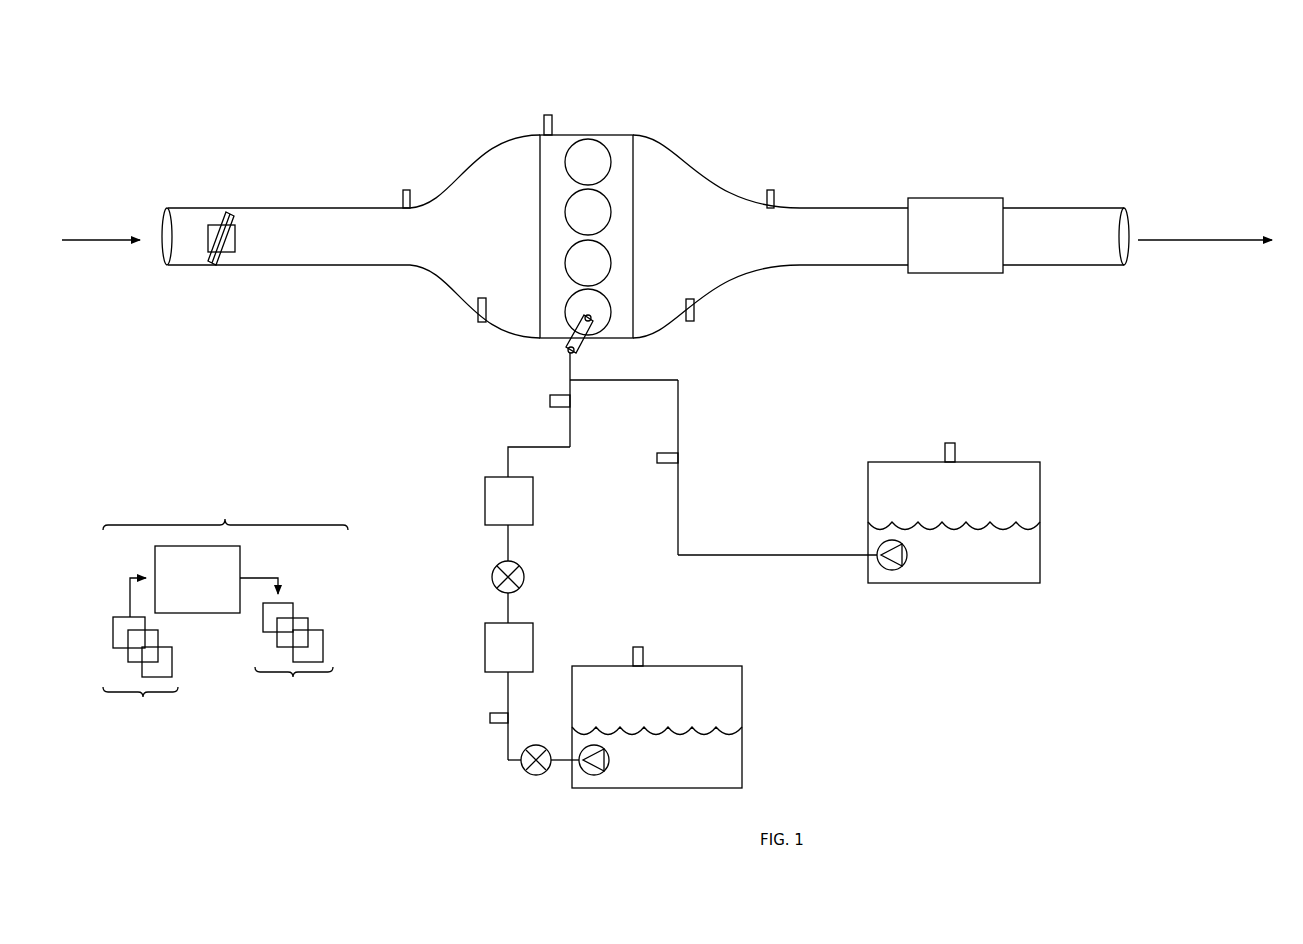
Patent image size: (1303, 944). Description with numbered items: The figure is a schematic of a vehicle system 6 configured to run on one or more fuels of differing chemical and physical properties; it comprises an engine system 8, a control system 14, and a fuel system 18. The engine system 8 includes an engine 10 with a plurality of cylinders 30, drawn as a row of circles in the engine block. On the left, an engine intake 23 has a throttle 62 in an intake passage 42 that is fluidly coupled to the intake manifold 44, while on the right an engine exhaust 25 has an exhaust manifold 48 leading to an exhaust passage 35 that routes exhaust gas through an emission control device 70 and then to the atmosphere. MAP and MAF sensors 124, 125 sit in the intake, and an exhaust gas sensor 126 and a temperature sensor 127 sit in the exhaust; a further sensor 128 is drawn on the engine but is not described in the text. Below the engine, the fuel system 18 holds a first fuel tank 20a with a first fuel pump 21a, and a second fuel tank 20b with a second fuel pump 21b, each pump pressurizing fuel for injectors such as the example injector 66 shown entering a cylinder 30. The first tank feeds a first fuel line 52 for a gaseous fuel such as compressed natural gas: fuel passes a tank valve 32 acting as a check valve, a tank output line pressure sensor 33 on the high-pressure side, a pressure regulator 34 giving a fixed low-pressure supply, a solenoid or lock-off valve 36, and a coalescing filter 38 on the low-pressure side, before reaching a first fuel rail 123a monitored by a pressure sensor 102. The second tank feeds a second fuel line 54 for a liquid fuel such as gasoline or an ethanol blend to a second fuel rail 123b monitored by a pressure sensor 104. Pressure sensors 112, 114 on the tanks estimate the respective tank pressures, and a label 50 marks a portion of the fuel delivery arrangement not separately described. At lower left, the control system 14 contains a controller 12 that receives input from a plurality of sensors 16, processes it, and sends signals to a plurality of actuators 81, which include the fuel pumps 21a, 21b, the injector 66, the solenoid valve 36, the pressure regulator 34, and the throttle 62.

The vehicle system 6 is at (238, 132).
The engine system 8 is at (752, 96).
The engine 10 is at (634, 219).
The controller 12 is at (197, 579).
The control system 14 is at (225, 503).
The sensors 16 is at (140, 656).
The fuel system 18 is at (870, 636).
The first fuel tank 20a is at (742, 769).
The second fuel tank 20b is at (1040, 566).
The first fuel pump 21a is at (606, 753).
The second fuel pump 21b is at (904, 549).
The engine intake 23 is at (355, 188).
The engine exhaust 25 is at (965, 148).
The cylinders 30 is at (611, 158).
The tank valve 32 is at (545, 749).
The tank output line pressure sensor 33 is at (492, 712).
The pressure regulator 34 is at (499, 659).
The exhaust passage 35 is at (1090, 208).
The solenoid valve 36 is at (519, 566).
The coalescing filter 38 is at (499, 513).
The intake passage 42 is at (268, 268).
The intake manifold 44 is at (493, 247).
The exhaust manifold 48 is at (690, 247).
The fuel delivery system 50 is at (988, 373).
The first fuel line 52 is at (476, 450).
The second fuel line 54 is at (740, 460).
The throttle 62 is at (235, 246).
The fuel injector 66 is at (582, 352).
The emission control device 70 is at (946, 247).
The actuators 81 is at (286, 647).
The first fuel rail pressure sensor 102 is at (550, 401).
The second fuel rail pressure sensor 104 is at (657, 459).
The first fuel tank pressure sensor 112 is at (633, 656).
The second fuel tank pressure sensor 114 is at (945, 455).
The first fuel rail 123a is at (516, 447).
The second fuel rail 123b is at (680, 501).
The MAP sensor 124 is at (410, 200).
The MAF sensor 125 is at (478, 301).
The exhaust gas sensor 126 is at (694, 306).
The temperature sensor 127 is at (767, 201).
The engine sensor 128 is at (552, 125).